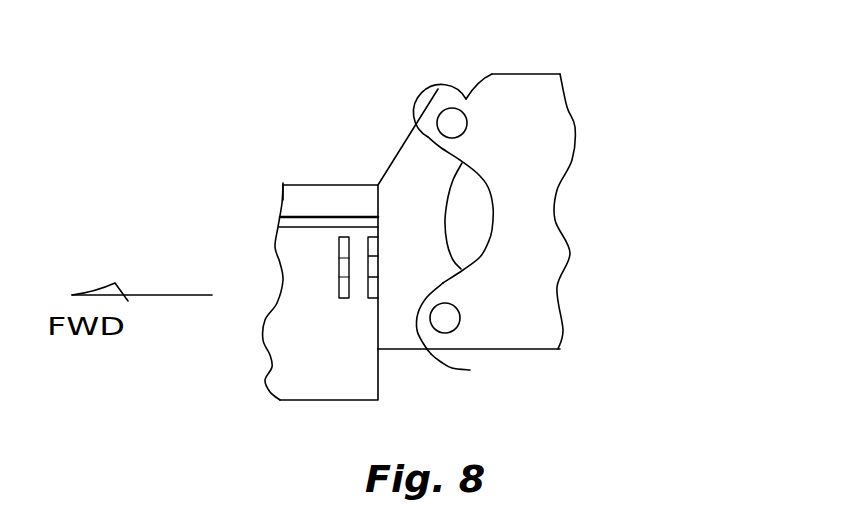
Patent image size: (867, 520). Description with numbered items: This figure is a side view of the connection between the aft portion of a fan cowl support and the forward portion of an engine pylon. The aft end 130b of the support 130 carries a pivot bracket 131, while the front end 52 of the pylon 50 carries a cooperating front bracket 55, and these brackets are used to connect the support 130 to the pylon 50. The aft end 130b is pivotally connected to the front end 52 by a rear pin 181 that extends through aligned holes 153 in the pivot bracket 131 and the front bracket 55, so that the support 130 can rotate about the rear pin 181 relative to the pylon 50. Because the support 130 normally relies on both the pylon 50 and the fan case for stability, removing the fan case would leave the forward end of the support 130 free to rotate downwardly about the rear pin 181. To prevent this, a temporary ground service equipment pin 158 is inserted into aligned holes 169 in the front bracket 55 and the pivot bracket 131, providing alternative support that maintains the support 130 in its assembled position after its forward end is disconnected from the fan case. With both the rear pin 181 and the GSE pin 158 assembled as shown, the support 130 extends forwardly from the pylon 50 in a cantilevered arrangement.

The engine pylon 50 is at (573, 128).
The front end of the pylon 52 is at (528, 207).
The front bracket 55 is at (452, 102).
The support 130 is at (293, 360).
The aft end of the support 130b is at (381, 380).
The pivot bracket 131 is at (407, 160).
The aligned holes 153 is at (461, 313).
The GSE pin 158 is at (445, 123).
The aligned holes 169 is at (456, 98).
The rear pin 181 is at (480, 371).